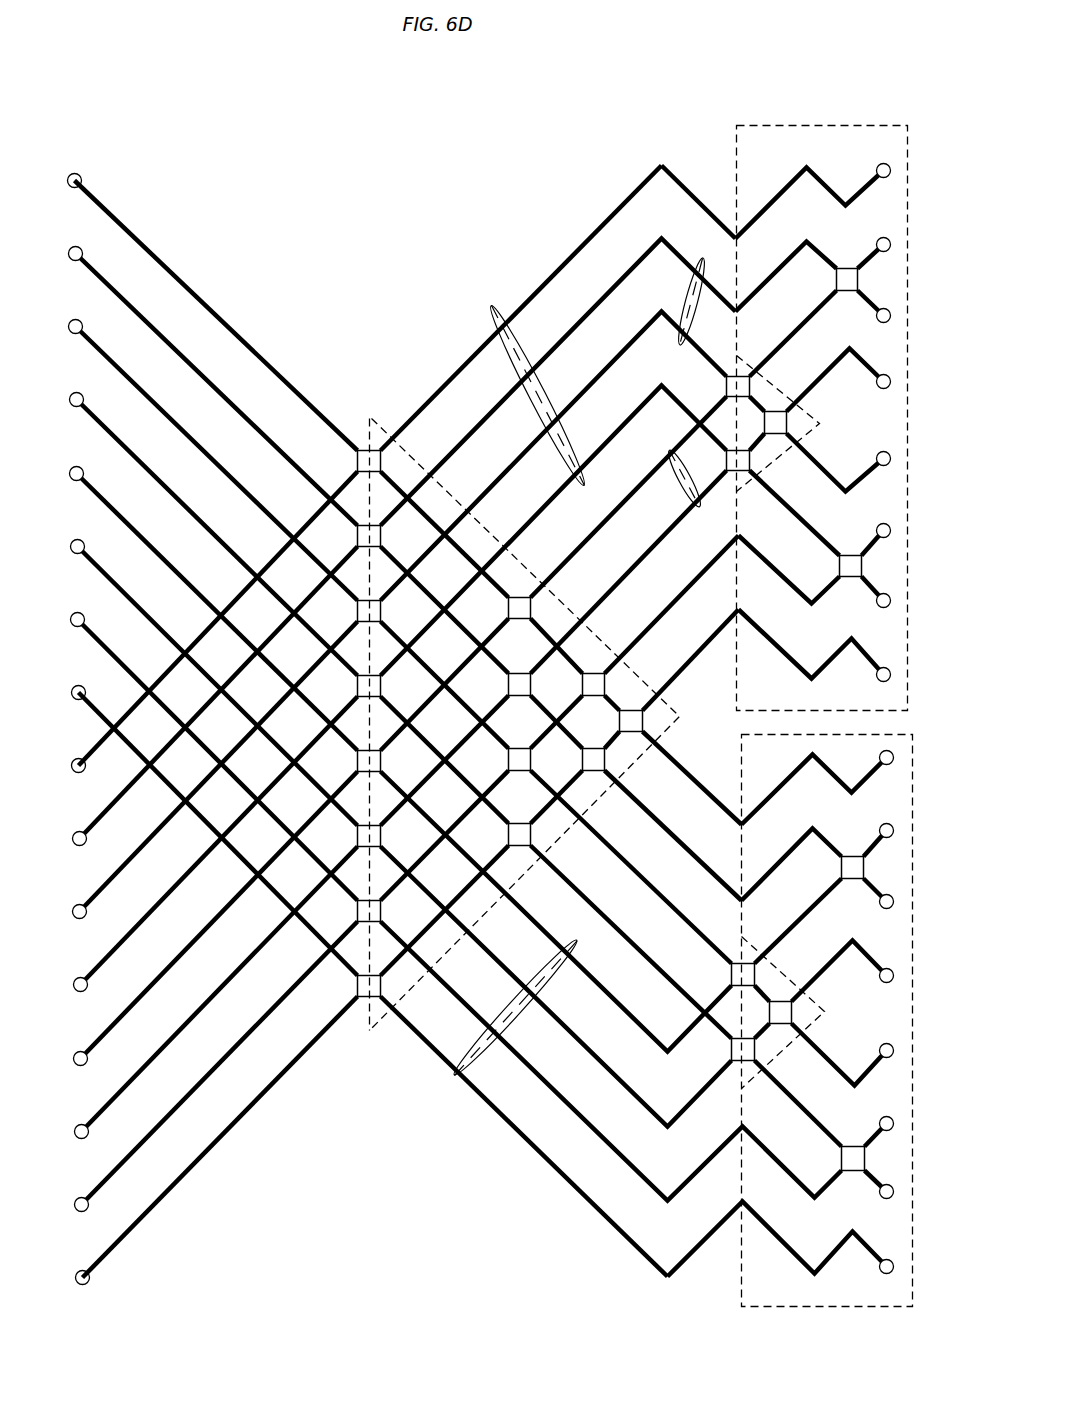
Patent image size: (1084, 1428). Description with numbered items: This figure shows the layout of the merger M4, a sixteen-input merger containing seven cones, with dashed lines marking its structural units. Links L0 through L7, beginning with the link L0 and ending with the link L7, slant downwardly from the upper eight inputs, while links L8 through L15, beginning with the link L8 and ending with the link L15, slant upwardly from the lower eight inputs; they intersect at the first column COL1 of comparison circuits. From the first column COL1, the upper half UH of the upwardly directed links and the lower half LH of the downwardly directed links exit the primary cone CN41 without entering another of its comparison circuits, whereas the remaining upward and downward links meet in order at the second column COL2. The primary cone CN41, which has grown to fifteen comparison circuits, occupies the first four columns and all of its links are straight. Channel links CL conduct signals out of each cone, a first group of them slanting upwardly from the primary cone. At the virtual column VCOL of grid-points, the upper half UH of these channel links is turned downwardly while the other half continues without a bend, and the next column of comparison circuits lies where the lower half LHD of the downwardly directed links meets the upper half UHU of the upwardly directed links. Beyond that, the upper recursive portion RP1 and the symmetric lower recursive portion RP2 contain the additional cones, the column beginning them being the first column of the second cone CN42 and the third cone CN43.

The merger M4 is at (262, 142).
The first column of comparison circuits COL1 is at (365, 120).
The second column of comparison circuits COL2 is at (513, 120).
The virtual column VCOL is at (660, 118).
The upper recursive portion RP1 is at (808, 126).
The lower recursive portion RP2 is at (832, 1310).
The link L0 is at (128, 232).
The link L7 is at (90, 706).
The link L8 is at (90, 753).
The link L15 is at (113, 1252).
The channel links CL is at (572, 253).
The primary cone CN41 is at (368, 420).
The second cone CN42 is at (763, 380).
The third cone CN43 is at (808, 1012).
The upper half of the links UH is at (490, 307).
The lower half of the links LH is at (460, 1085).
The lower half of the downwardly-directed links LHD is at (703, 267).
The upper half of the upwardly directed links UHU is at (696, 508).